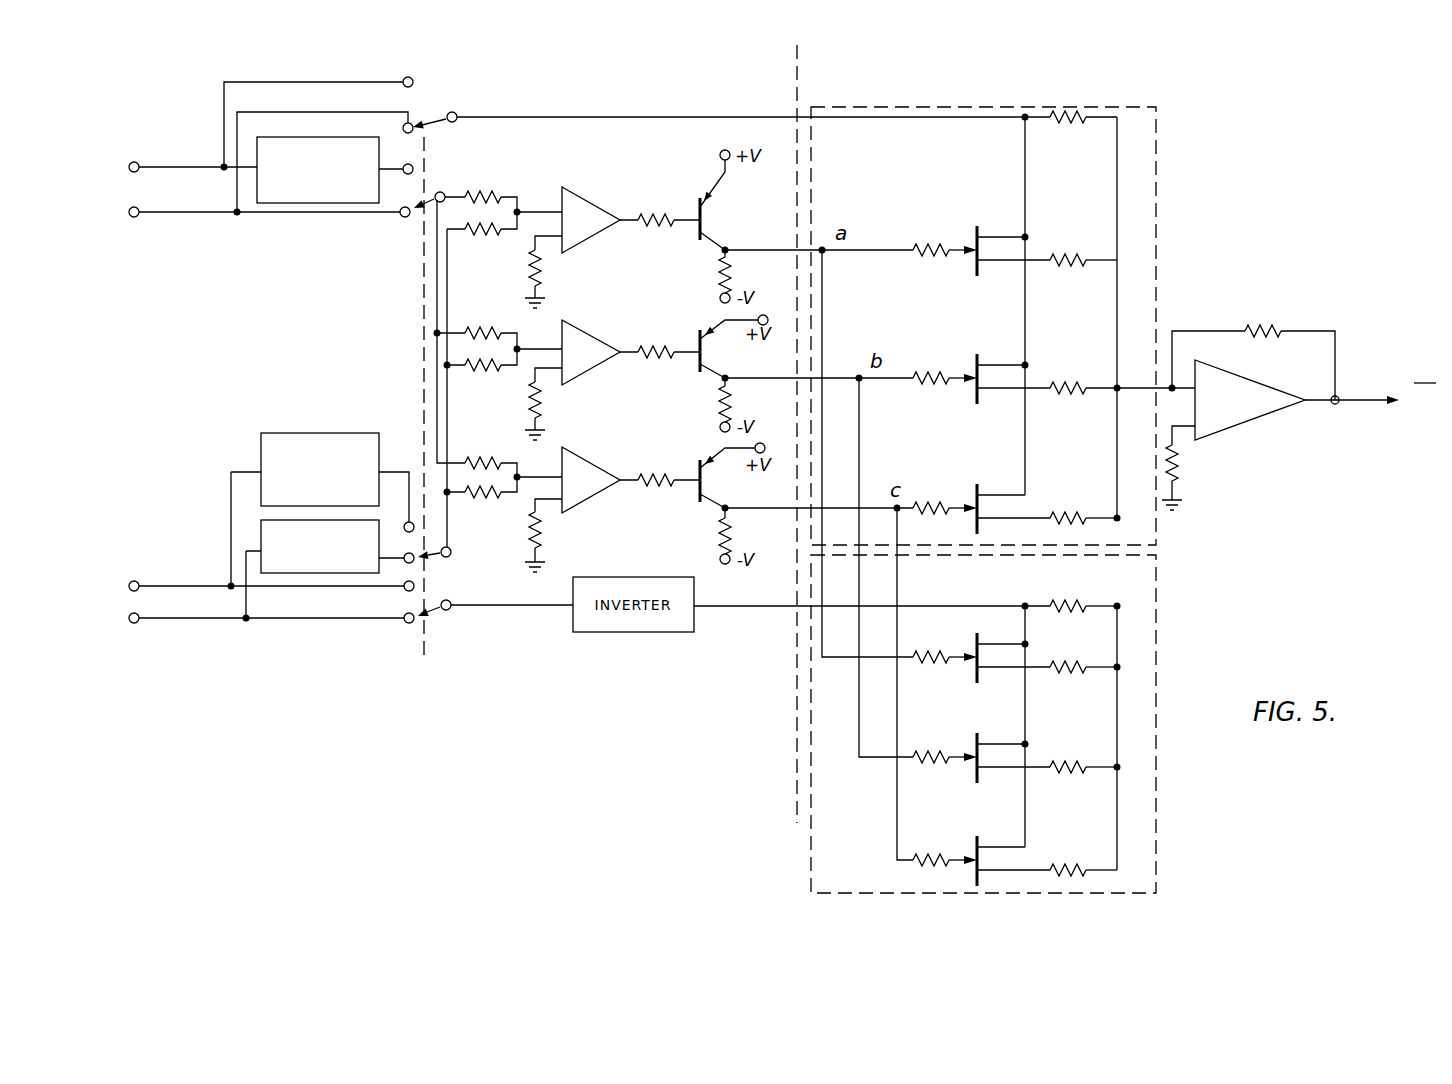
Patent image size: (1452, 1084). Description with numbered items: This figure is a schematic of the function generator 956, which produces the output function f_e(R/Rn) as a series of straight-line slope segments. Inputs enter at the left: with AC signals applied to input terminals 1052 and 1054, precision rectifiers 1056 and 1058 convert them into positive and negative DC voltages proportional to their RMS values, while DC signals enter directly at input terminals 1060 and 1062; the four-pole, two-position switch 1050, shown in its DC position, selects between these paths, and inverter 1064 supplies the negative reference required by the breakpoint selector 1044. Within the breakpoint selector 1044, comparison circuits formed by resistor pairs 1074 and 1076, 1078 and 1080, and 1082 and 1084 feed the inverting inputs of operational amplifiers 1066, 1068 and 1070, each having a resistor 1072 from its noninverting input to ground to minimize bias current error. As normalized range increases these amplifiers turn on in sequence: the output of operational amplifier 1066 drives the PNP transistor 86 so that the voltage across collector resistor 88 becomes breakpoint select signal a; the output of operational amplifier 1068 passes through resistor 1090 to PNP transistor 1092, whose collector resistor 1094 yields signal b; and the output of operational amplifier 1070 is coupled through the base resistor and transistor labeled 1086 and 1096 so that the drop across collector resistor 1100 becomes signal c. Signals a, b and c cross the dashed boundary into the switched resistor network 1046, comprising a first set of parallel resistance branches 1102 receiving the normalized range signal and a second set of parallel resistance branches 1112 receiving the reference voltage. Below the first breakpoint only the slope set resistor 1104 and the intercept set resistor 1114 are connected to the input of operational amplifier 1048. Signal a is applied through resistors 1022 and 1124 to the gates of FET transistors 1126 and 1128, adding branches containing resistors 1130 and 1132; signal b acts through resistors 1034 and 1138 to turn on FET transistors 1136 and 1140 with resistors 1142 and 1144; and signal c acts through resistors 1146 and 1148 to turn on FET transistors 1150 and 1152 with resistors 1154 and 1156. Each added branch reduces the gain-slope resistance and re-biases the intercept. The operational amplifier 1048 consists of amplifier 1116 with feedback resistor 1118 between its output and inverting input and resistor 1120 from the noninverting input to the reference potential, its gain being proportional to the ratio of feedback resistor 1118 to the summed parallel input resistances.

The input terminal 1052 is at (138, 162).
The input terminal 1060 is at (138, 219).
The input terminal 1054 is at (138, 578).
The input terminal 1062 is at (136, 625).
The precision rectifier 1056 is at (288, 204).
The precision rectifier 1058 is at (313, 433).
The inverter 1064 is at (302, 563).
The four-pole, two-position switch 1050 is at (420, 302).
The breakpoint selector 1044 is at (603, 110).
The resistor 1074 is at (490, 190).
The resistor 1076 is at (478, 238).
The resistor 1078 is at (483, 325).
The resistor 1080 is at (486, 382).
The resistor 1082 is at (482, 456).
The resistor 1084 is at (486, 512).
The resistor 1072 is at (541, 276).
The operational amplifier 1066 is at (589, 206).
The operational amplifier 1068 is at (583, 336).
The operational amplifier 1070 is at (580, 467).
The resistor 1090 is at (645, 343).
The PNP transistor 1086 is at (650, 470).
The transistor 86 is at (712, 223).
The resistor 88 is at (718, 270).
The PNP transistor 1092 is at (700, 361).
The collector resistor 1094 is at (718, 396).
The resistor 1096 is at (700, 494).
The collector resistor 1100 is at (725, 531).
The function generator 956 is at (806, 104).
The switched resistor network 1046 is at (1150, 105).
The second set of parallel resistance branches 1112 is at (1153, 665).
The first set of parallel resistance branches 1102 is at (1156, 230).
The slope set resistor 1104 is at (1075, 111).
The resistor 1022 is at (928, 245).
The FET transistor 1126 is at (984, 223).
The resistance 1130 is at (1078, 254).
The resistor 1034 is at (924, 370).
The FET transistor 1136 is at (984, 353).
The resistor 1142 is at (1078, 378).
The resistor 1146 is at (926, 500).
The FET transistor 1150 is at (984, 483).
The resistor 1154 is at (1078, 510).
The intercept set resistor 1114 is at (1070, 605).
The resistor 1124 is at (930, 650).
The FET transistor 1128 is at (982, 641).
The resistor 1132 is at (1075, 660).
The resistor 1138 is at (923, 750).
The FET transistor 1140 is at (984, 735).
The resistor 1144 is at (1075, 755).
The resistor 1148 is at (930, 850).
The FET transistor 1152 is at (984, 840).
The resistor 1156 is at (1075, 860).
The amplifier 1116 is at (1270, 421).
The feedback resistor 1118 is at (1265, 325).
The resistor 1120 is at (1180, 470).
The operational amplifier 1048 is at (1310, 318).